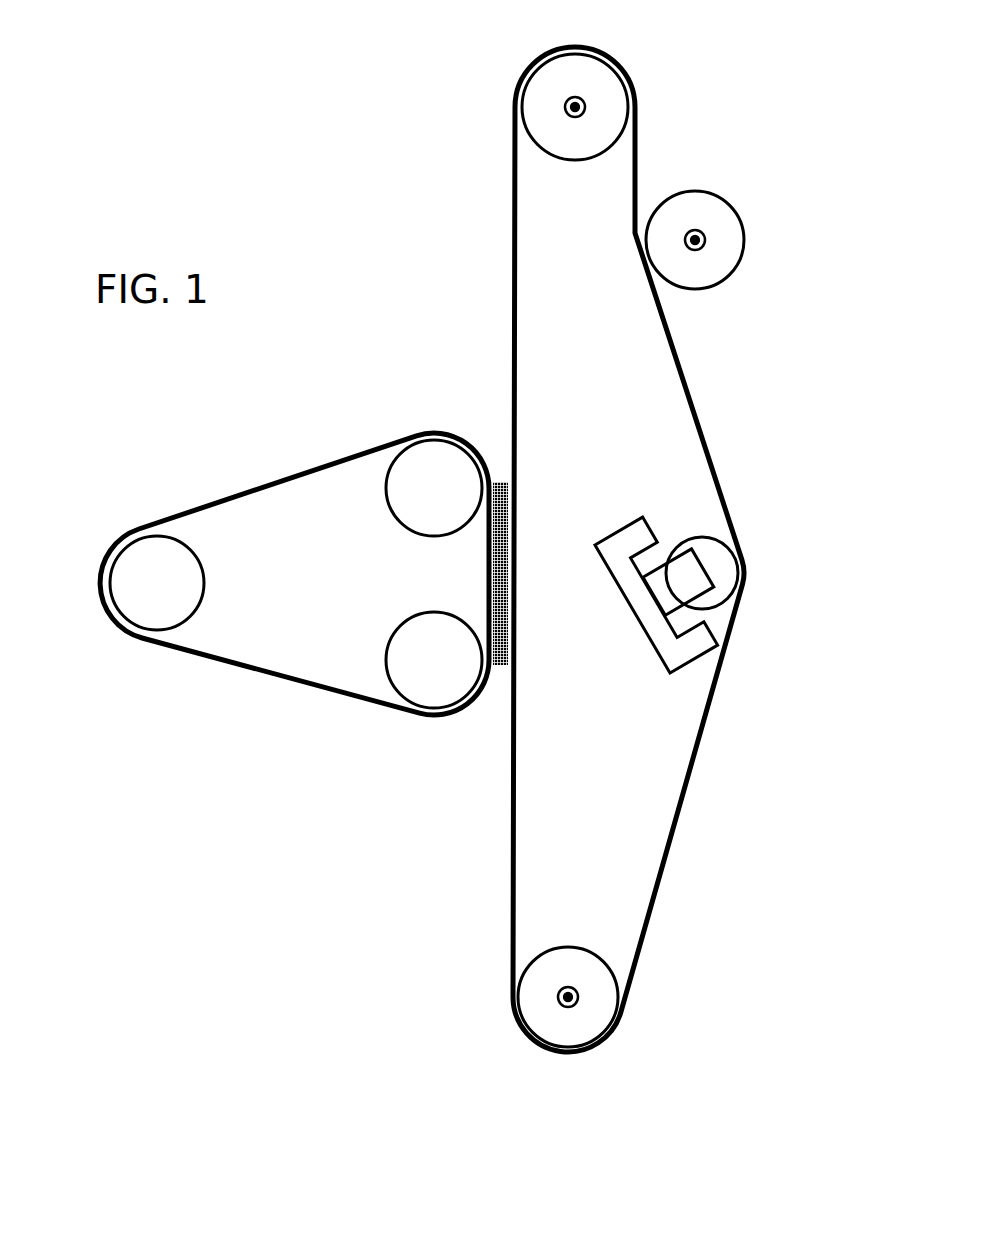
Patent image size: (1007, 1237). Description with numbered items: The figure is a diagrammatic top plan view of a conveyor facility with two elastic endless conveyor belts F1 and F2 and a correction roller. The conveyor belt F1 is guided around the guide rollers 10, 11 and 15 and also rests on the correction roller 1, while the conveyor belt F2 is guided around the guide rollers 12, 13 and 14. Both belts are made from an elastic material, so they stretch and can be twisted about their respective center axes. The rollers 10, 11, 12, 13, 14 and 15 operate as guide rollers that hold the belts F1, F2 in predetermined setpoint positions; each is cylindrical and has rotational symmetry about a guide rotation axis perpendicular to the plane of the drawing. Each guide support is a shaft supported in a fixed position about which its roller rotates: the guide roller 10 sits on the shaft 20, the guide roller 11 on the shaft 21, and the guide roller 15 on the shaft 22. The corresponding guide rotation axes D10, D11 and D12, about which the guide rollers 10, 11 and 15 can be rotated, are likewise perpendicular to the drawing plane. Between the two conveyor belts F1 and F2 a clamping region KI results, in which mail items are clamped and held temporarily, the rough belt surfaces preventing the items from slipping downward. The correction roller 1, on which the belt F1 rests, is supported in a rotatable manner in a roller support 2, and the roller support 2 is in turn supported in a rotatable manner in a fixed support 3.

The correction roller 1 is at (730, 557).
The roller support 2 is at (703, 597).
The fixed support 3 is at (651, 645).
The guide roller 10 is at (623, 116).
The guide roller 11 is at (605, 1031).
The guide roller 12 is at (128, 572).
The guide roller 13 is at (413, 482).
The guide roller 14 is at (406, 671).
The guide roller 15 is at (728, 272).
The shaft 20 is at (597, 89).
The shaft 21 is at (543, 1006).
The shaft 22 is at (724, 241).
The guide rotation axis D10 is at (549, 113).
The guide rotation axis D11 is at (548, 982).
The guide rotation axis D12 is at (700, 217).
The conveyor belt F1 is at (715, 734).
The conveyor belt F2 is at (267, 678).
The clamping region KI is at (528, 517).